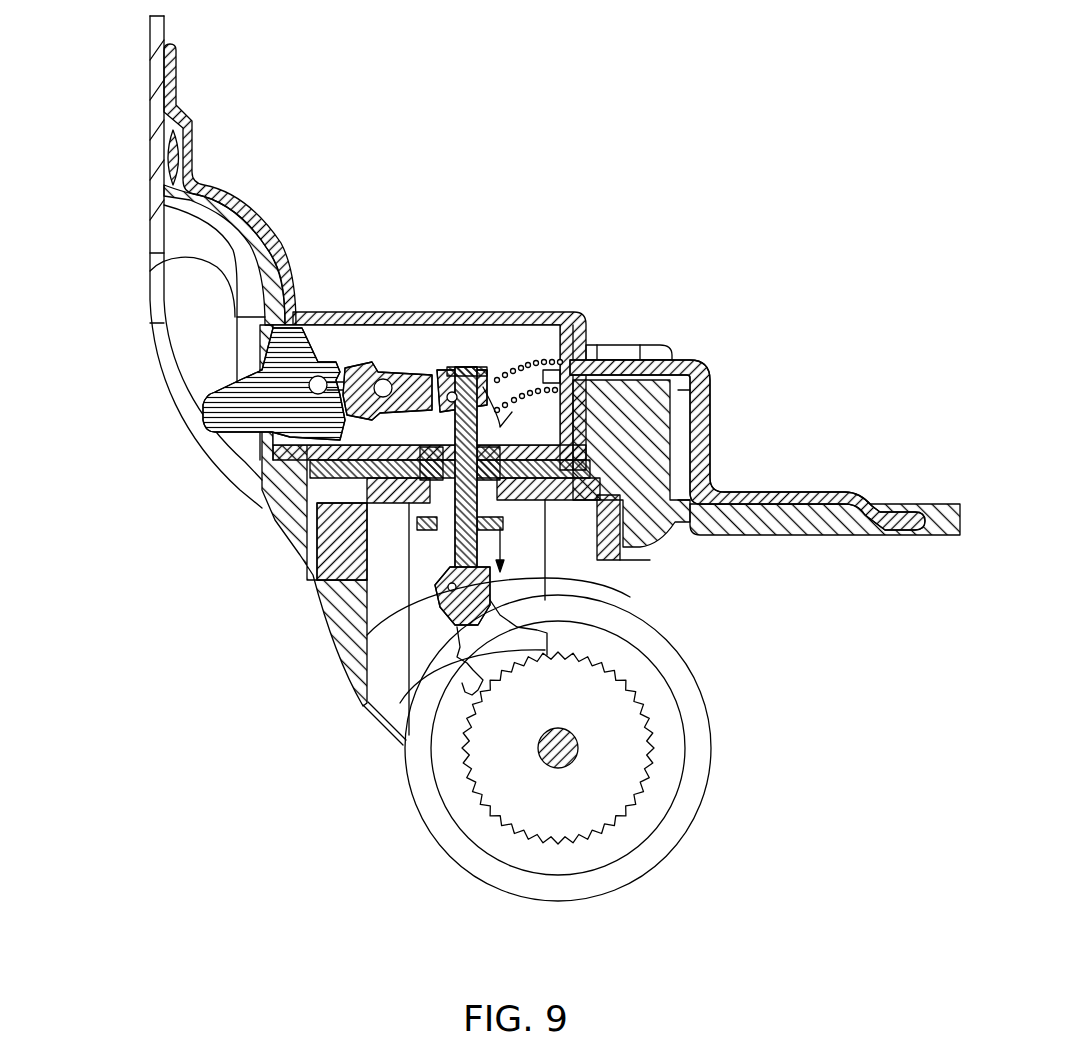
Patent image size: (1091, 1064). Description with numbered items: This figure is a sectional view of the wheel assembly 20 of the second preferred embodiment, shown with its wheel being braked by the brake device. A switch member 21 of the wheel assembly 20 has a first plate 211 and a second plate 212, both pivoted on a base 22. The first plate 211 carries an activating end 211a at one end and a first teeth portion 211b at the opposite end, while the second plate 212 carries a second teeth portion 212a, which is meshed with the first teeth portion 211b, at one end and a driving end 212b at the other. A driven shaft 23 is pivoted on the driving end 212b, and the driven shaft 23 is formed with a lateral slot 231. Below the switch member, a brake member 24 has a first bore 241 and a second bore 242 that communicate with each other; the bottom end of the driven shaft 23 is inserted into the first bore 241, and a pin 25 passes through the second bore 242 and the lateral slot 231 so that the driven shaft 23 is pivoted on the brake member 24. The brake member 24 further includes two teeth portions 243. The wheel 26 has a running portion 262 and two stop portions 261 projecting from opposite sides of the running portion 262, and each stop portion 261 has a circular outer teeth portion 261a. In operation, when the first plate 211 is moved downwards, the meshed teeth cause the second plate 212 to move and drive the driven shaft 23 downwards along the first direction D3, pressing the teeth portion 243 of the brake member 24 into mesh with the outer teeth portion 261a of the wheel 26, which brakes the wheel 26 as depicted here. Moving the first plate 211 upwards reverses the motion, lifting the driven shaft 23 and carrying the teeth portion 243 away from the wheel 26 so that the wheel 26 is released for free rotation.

The wheel assembly 20 is at (100, 110).
The switch member 21 is at (172, 401).
The first plate 211 is at (150, 580).
The activating end 211a is at (210, 413).
The first teeth portion 211b is at (330, 393).
The second plate 212 is at (496, 222).
The second teeth portion 212a is at (361, 362).
The driving end 212b is at (433, 368).
The base 22 is at (213, 240).
The driven shaft 23 is at (500, 427).
The brake member 24 is at (565, 640).
The first bore 241 is at (433, 587).
The second bore 242 is at (362, 633).
The lateral slot 231 is at (433, 598).
The teeth portions 243 is at (400, 707).
The pin 25 is at (577, 581).
The wheel 26 is at (641, 748).
The stop portions 261 is at (635, 755).
The circular outer teeth portion 261a is at (652, 755).
The running portion 262 is at (692, 788).
The first direction D3 is at (519, 550).